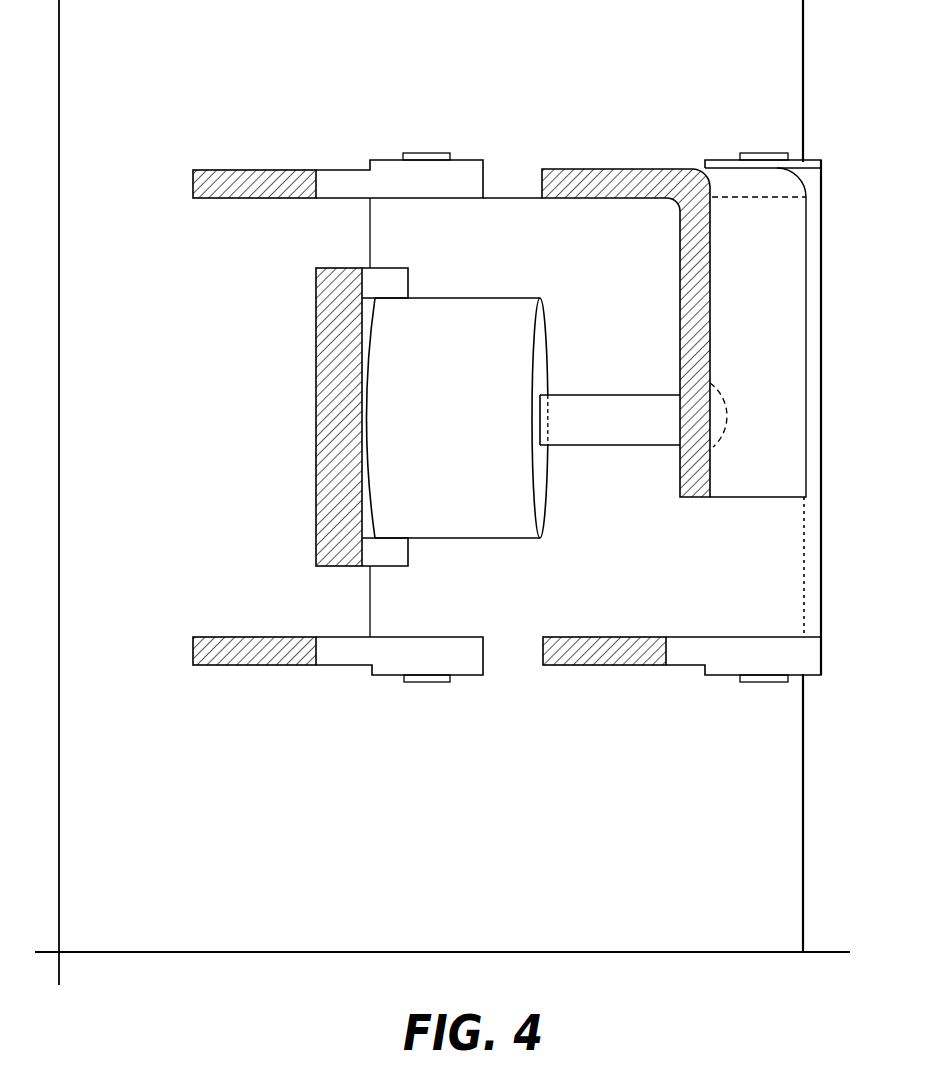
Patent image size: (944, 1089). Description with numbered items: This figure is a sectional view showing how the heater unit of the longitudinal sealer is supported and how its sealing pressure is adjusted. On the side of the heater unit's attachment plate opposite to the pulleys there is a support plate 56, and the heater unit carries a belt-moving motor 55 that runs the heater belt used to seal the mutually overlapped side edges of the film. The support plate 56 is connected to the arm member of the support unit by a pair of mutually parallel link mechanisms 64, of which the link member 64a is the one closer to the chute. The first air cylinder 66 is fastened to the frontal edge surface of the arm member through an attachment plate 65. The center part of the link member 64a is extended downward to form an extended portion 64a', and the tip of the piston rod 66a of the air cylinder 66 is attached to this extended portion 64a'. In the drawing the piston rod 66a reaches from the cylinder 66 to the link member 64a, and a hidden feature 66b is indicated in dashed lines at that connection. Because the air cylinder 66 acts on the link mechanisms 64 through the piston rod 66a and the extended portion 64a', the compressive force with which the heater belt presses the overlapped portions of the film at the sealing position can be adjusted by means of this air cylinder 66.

The belt-moving motor 55 is at (757, 787).
The support plate 56 is at (510, 213).
The link mechanisms 64 is at (626, 397).
The link member 64a is at (626, 291).
The extended portion 64a' is at (797, 402).
The attachment plate 65 is at (330, 450).
The air cylinder 66 is at (462, 522).
The piston rod 66a is at (610, 422).
The shaft hole 66b is at (720, 420).